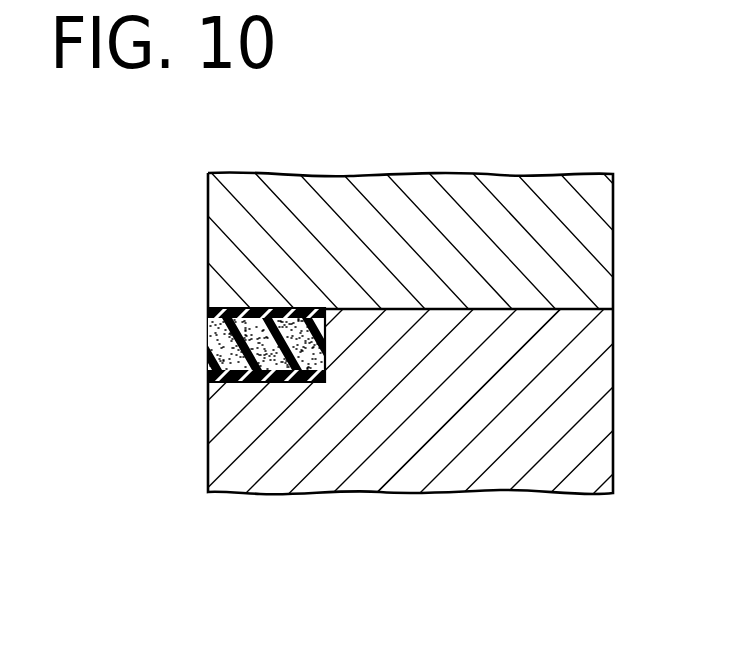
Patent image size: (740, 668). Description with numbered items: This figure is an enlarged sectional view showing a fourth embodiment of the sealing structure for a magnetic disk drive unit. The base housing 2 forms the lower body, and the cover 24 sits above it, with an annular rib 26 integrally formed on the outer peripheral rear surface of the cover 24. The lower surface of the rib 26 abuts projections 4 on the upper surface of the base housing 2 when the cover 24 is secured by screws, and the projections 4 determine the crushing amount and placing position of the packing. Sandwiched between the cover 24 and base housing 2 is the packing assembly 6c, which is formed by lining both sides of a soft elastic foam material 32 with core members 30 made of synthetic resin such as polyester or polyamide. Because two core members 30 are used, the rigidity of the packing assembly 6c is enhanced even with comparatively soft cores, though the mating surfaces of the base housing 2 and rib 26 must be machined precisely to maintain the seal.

The base housing 2 is at (390, 496).
The projections 4 is at (473, 472).
The packing assembly 6c is at (213, 333).
The cover 24 is at (418, 172).
The annular rib 26 is at (507, 186).
The core members 30 is at (207, 333).
The foam material 32 is at (208, 348).